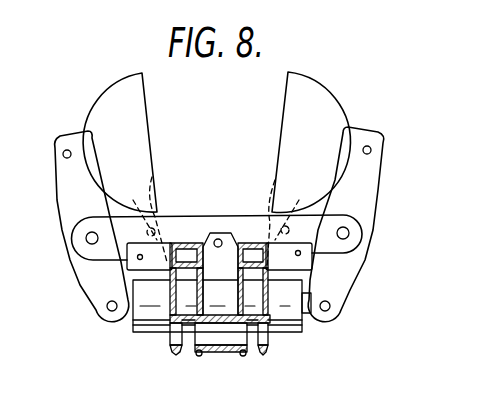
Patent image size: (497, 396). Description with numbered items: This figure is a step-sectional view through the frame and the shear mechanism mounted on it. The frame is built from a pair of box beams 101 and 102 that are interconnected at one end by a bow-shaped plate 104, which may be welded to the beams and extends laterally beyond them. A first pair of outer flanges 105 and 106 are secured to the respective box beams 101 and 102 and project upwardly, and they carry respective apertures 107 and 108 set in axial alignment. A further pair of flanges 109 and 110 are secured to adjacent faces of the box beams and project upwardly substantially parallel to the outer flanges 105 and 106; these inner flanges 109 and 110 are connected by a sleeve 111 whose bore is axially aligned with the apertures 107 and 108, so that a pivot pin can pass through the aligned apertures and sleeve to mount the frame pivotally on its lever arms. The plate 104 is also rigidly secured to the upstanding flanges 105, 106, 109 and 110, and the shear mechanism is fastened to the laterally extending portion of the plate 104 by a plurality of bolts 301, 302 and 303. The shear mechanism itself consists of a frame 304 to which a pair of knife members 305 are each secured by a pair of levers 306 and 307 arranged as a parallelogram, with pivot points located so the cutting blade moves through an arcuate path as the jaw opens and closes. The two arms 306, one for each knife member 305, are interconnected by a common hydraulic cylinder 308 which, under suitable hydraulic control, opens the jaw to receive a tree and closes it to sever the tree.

The box beam 101 is at (268, 225).
The box beam 102 is at (183, 243).
The plate 104 is at (303, 264).
The outer flange 105 is at (330, 327).
The outer flange 106 is at (170, 290).
The aperture 107 is at (267, 340).
The aperture 108 is at (165, 330).
The flange 109 is at (246, 325).
The flange 110 is at (195, 295).
The sleeve 111 is at (227, 355).
The bolt 301 is at (302, 253).
The bolt 302 is at (218, 238).
The bolt 303 is at (138, 252).
The frame 304 is at (255, 243).
The knife member 305 is at (293, 87).
The lever 306 is at (370, 183).
The lever 307 is at (153, 190).
The hydraulic cylinder 308 is at (285, 321).